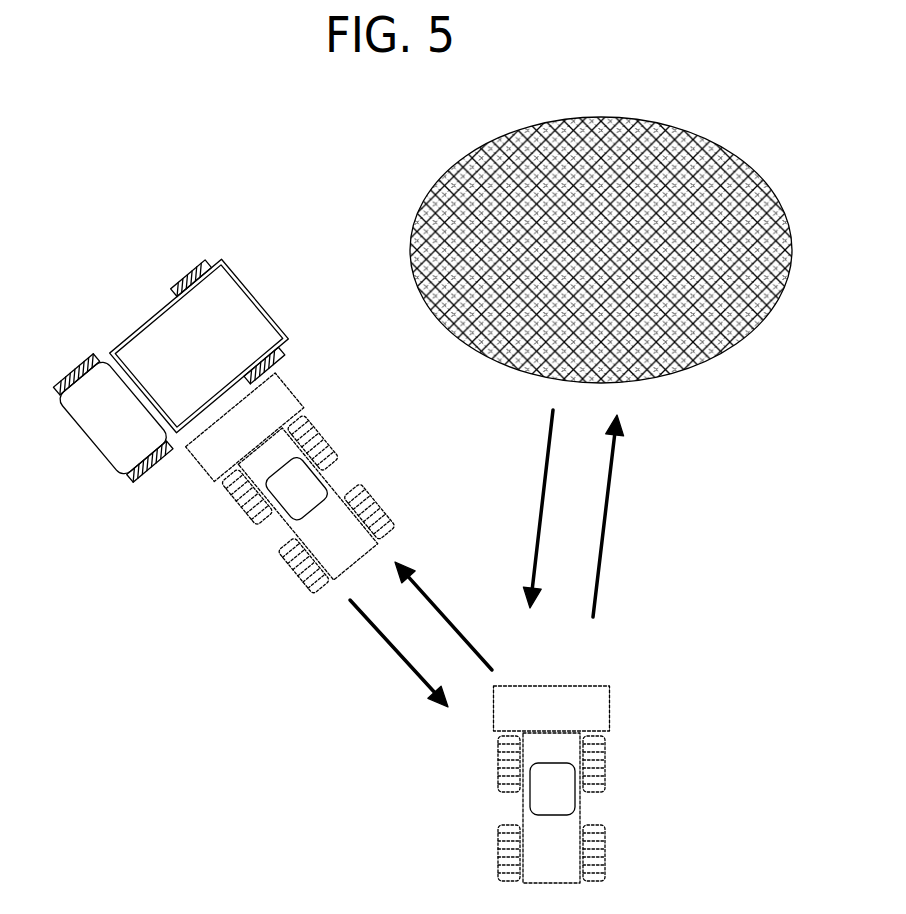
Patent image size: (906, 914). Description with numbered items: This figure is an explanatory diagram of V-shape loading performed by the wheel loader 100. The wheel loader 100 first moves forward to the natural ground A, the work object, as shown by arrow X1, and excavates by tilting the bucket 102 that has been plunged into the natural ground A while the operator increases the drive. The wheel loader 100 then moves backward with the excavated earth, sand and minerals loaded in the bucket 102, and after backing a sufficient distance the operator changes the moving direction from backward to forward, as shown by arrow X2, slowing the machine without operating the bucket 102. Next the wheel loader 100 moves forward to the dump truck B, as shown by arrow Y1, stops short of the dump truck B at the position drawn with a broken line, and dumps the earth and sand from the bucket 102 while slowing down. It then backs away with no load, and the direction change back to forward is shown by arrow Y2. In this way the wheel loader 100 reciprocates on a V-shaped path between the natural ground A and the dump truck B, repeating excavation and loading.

The wheel loader 100 is at (400, 647).
The bucket 102 is at (439, 532).
The natural ground A is at (601, 216).
The dump truck B is at (172, 352).
The arrow X1 is at (626, 516).
The arrow X2 is at (522, 509).
The arrow Y1 is at (443, 616).
The arrow Y2 is at (397, 653).